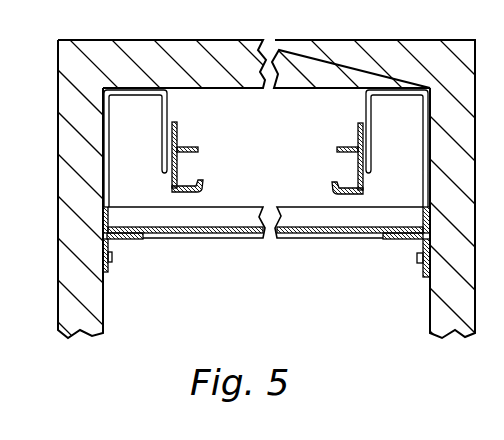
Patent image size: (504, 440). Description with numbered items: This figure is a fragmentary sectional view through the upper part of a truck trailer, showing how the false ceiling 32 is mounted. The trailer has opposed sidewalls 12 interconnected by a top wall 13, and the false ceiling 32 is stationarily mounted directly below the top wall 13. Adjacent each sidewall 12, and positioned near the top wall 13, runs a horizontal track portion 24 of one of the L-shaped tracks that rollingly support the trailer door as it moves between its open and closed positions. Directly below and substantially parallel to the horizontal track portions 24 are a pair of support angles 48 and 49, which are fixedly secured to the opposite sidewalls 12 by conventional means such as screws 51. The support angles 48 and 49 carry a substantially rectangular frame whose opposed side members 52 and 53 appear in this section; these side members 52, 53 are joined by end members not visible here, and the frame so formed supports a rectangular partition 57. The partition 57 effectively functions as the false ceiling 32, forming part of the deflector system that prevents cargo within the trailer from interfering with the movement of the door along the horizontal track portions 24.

The sidewall 12 is at (72, 105).
The top wall 13 is at (207, 50).
The horizontal track portion 24 is at (192, 147).
The false ceiling 32 is at (199, 238).
The support angle 48 is at (128, 240).
The support angle 49 is at (410, 243).
The screw 51 is at (112, 258).
The side member 52 is at (112, 208).
The side member 53 is at (423, 210).
The rectangular partition 57 is at (203, 226).